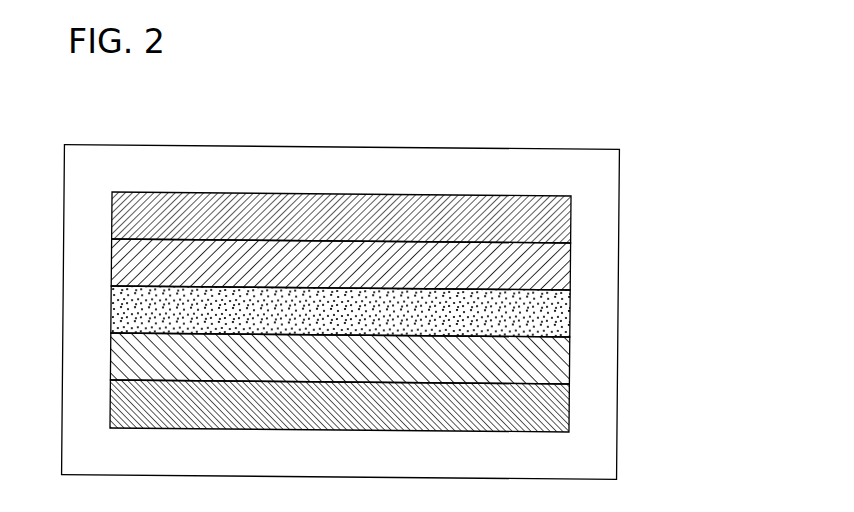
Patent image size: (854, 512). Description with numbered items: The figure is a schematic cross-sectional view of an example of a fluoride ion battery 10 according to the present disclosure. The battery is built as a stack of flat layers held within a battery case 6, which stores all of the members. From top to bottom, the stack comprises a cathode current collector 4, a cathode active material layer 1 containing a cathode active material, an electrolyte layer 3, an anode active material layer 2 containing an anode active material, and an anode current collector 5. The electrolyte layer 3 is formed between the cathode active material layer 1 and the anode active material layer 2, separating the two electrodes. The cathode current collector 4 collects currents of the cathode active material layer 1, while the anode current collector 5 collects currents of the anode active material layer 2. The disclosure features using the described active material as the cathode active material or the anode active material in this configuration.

The fluoride ion battery 10 is at (382, 277).
The battery case 6 is at (587, 180).
The cathode current collector 4 is at (553, 215).
The cathode active material layer 1 is at (555, 267).
The electrolyte layer 3 is at (537, 322).
The anode active material layer 2 is at (537, 370).
The anode current collector 5 is at (537, 413).